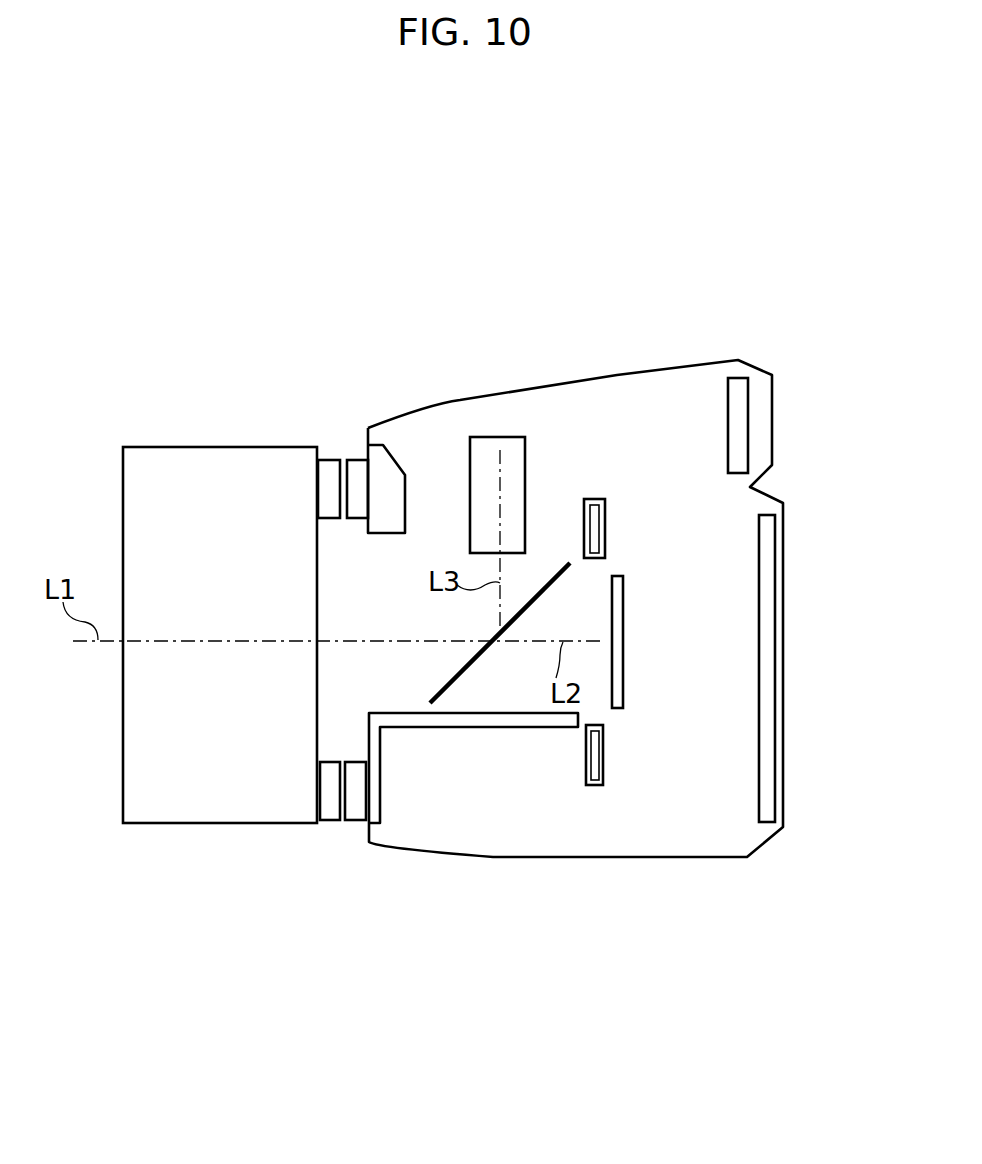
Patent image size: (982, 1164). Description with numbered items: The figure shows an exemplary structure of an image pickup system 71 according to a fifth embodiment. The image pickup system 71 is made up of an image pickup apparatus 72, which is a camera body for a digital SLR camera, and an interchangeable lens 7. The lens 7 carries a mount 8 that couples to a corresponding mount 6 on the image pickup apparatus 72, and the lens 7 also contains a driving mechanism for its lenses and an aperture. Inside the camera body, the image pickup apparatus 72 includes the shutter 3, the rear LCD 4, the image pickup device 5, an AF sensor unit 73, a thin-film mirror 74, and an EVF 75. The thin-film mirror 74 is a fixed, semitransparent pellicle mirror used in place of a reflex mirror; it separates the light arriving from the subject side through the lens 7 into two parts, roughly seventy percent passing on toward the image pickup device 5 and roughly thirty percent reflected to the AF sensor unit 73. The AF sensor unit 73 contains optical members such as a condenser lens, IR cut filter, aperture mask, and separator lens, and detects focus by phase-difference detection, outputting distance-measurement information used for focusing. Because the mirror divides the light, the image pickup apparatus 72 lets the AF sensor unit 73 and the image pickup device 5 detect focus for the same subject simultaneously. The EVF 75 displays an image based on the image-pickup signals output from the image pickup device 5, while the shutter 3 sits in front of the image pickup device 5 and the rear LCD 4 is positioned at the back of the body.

The image pickup system 71 is at (560, 135).
The image pickup apparatus 72 is at (617, 375).
The AF sensor unit 73 is at (485, 437).
The thin-film mirror 74 is at (465, 672).
The EVF 75 is at (752, 380).
The lens 7 is at (160, 447).
The mount 8 is at (325, 460).
The mount 6 is at (352, 460).
The shutter 3 is at (605, 528).
The rear LCD 4 is at (778, 604).
The image pickup device 5 is at (623, 642).